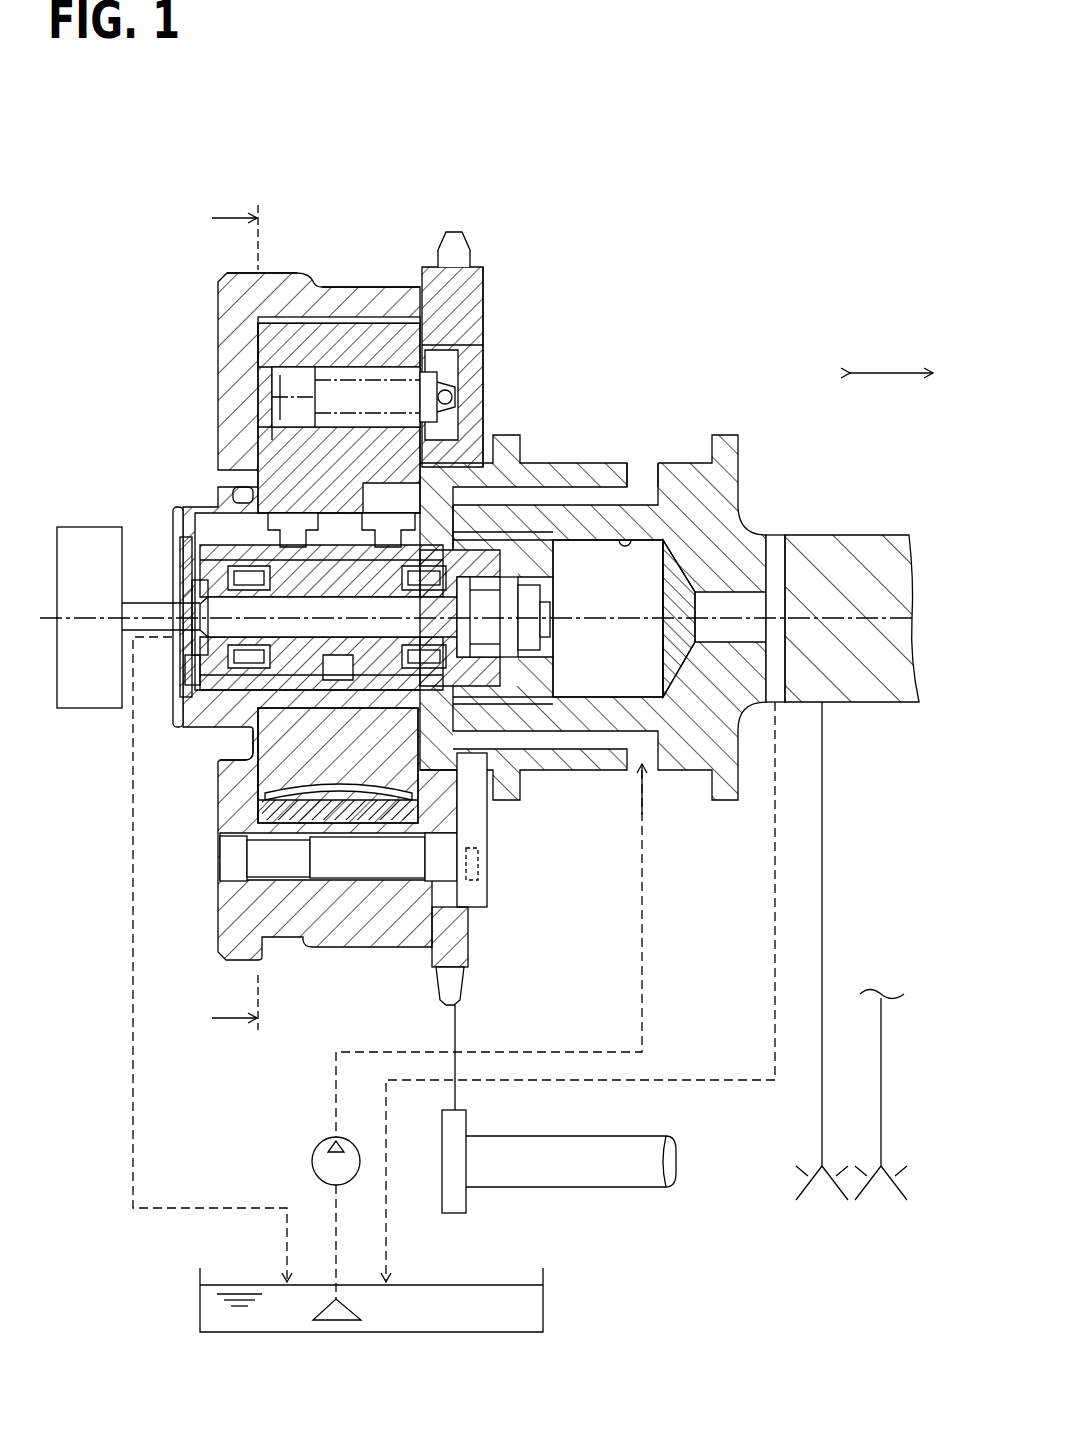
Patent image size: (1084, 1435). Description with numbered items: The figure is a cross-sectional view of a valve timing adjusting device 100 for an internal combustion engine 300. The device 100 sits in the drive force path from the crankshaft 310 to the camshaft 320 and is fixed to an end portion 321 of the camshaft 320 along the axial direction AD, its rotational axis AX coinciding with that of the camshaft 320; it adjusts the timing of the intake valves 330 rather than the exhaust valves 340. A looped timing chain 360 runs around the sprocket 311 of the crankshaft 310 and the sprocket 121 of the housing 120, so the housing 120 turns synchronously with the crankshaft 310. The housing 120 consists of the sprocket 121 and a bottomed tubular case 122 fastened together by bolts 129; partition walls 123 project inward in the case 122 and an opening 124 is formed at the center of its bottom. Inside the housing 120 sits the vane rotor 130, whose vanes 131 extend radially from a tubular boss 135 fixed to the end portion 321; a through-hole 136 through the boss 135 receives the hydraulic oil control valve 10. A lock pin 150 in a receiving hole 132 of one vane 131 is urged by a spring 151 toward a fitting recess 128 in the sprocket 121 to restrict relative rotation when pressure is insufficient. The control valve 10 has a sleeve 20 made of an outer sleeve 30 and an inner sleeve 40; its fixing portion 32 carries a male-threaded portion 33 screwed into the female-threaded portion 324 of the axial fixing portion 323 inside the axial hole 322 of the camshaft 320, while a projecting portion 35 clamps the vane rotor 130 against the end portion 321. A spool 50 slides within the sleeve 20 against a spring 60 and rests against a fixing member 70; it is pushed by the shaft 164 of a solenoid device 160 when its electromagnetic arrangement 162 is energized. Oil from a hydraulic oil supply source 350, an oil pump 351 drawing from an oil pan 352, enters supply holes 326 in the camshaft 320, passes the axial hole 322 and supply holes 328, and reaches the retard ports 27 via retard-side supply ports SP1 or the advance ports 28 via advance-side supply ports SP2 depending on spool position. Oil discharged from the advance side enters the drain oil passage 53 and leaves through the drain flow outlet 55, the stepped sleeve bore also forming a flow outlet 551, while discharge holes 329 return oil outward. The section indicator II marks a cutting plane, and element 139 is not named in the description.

The hydraulic oil control valve 10 is at (373, 548).
The sleeve 20 is at (738, 664).
The retard port 27 is at (458, 390).
The advance port 28 is at (250, 545).
The outer sleeve 30 is at (648, 737).
The fixing portion 32 is at (535, 618).
The male-threaded portion 33 is at (540, 587).
The projecting portion 35 is at (242, 733).
The inner sleeve 40 is at (540, 672).
The spool 50 is at (180, 552).
The drain oil passage 53 is at (367, 632).
The drain flow outlet 55 is at (183, 590).
The spring 60 is at (560, 607).
The fixing member 70 is at (178, 658).
The valve timing adjusting device 100 is at (498, 739).
The housing 120 is at (410, 245).
The sprocket 121 is at (448, 240).
The case 122 is at (300, 272).
The partition walls 123 is at (285, 832).
The opening 124 is at (238, 512).
The fitting recess 128 is at (470, 340).
The bolts 129 is at (485, 892).
The vane rotor 130 is at (372, 316).
The vanes 131 is at (267, 318).
The receiving hole 132 is at (303, 327).
The boss 135 is at (390, 745).
The through-hole 136 is at (252, 768).
The passage 139 is at (478, 857).
The lock pin 150 is at (465, 305).
The spring 151 is at (280, 340).
The solenoid device 160 is at (122, 623).
The electromagnetic arrangement 162 is at (70, 712).
The shaft 164 is at (133, 622).
The internal combustion engine 300 is at (498, 739).
The crankshaft 310 is at (559, 1184).
The sprocket 311 is at (457, 1210).
The camshaft 320 is at (840, 548).
The end portion 321 is at (592, 470).
The axial hole 322 is at (640, 483).
The axial fixing portion 323 is at (555, 525).
The female-threaded portion 324 is at (560, 538).
The supply holes 326 is at (676, 804).
The supply holes 328 is at (435, 770).
The discharge holes 329 is at (770, 548).
The intake valves 330 is at (821, 1140).
The exhaust valves 340 is at (882, 1140).
The hydraulic oil supply source 350 is at (450, 984).
The oil pump 351 is at (314, 1143).
The oil pan 352 is at (200, 1300).
The timing chain 360 is at (446, 1016).
The flow outlet 551 is at (556, 627).
The retard-side supply ports SP1 is at (447, 470).
The advance-side supply ports SP2 is at (218, 510).
The rotational axis AX is at (499, 617).
The axial direction AD is at (891, 351).
The section line II is at (220, 620).